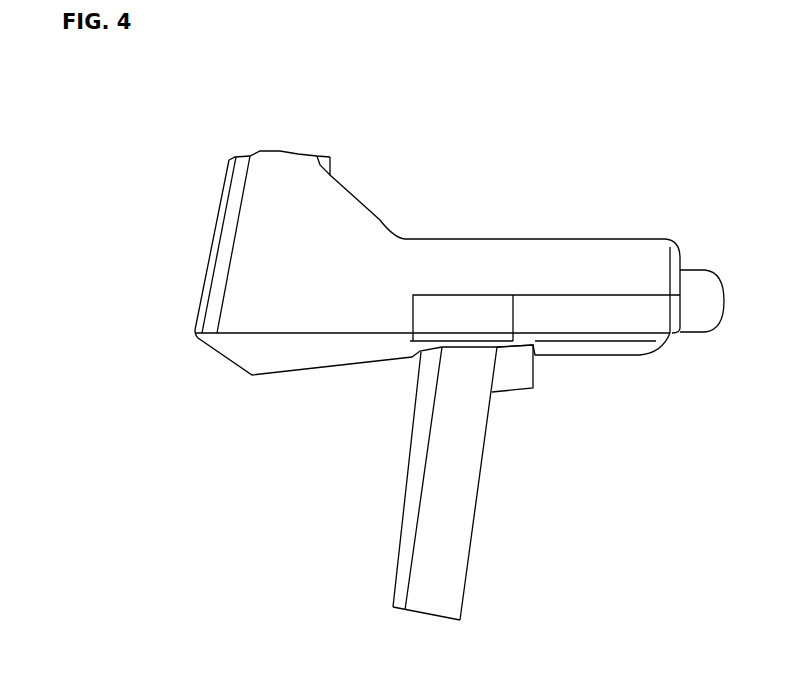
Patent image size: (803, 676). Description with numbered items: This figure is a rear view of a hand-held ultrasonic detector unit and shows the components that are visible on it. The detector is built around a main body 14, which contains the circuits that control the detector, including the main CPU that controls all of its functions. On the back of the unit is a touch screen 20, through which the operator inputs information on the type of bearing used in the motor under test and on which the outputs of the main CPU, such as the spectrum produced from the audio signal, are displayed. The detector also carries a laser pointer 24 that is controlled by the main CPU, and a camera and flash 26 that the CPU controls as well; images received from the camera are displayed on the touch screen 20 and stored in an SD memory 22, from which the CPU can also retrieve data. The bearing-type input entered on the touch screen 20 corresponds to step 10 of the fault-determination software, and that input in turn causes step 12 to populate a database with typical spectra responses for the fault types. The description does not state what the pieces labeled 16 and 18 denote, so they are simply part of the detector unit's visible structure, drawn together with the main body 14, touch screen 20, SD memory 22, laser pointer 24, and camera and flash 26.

The step 10 is at (493, 138).
The step 12 is at (483, 461).
The main body 14 is at (512, 238).
The barrel nozzle 16 is at (698, 268).
The top edge 18 is at (250, 156).
The touch screen 20 is at (215, 222).
The SD memory 22 is at (222, 197).
The laser pointer 24 is at (378, 212).
The camera and flash 26 is at (333, 162).